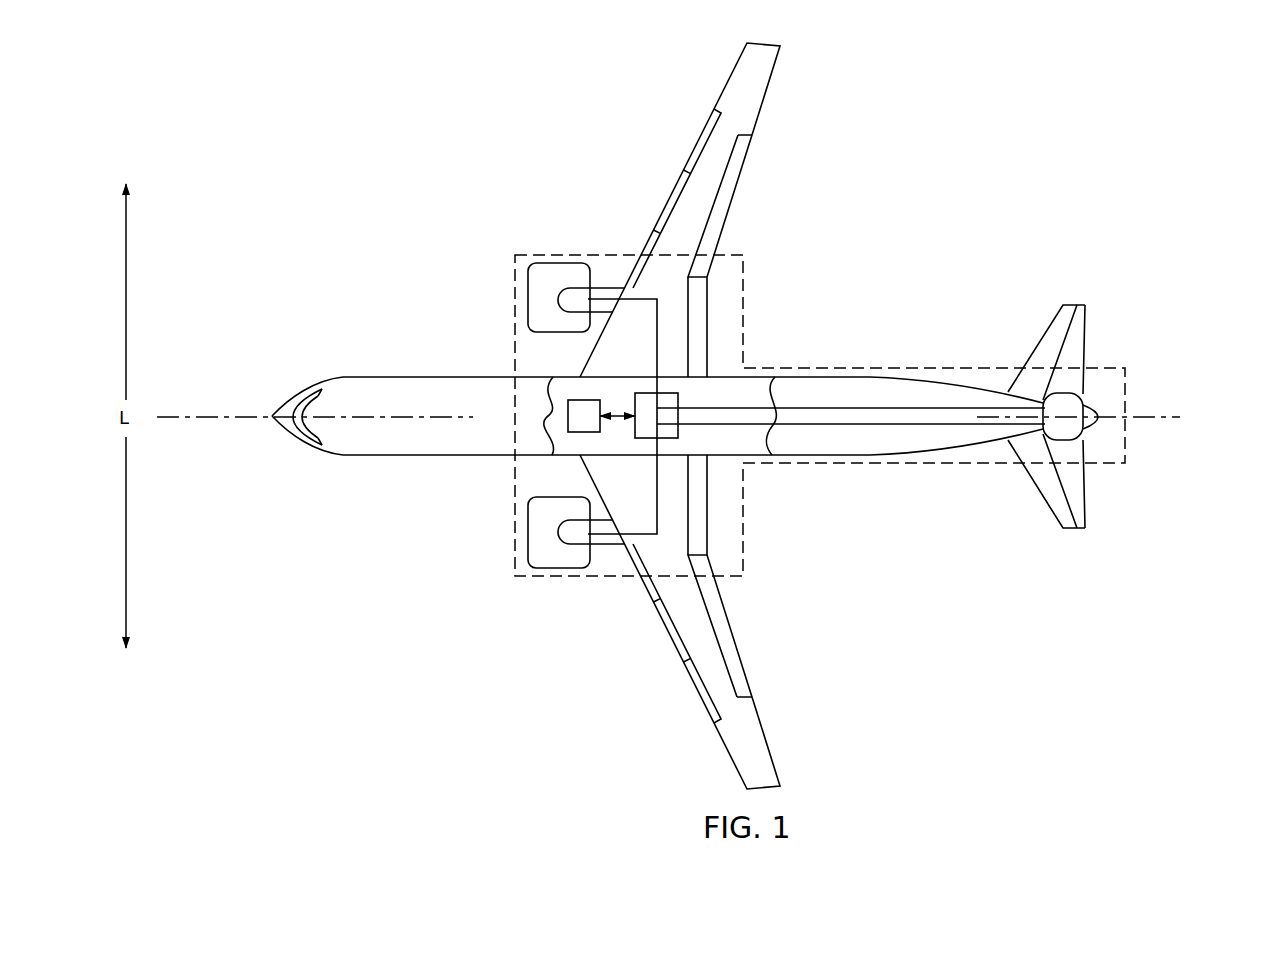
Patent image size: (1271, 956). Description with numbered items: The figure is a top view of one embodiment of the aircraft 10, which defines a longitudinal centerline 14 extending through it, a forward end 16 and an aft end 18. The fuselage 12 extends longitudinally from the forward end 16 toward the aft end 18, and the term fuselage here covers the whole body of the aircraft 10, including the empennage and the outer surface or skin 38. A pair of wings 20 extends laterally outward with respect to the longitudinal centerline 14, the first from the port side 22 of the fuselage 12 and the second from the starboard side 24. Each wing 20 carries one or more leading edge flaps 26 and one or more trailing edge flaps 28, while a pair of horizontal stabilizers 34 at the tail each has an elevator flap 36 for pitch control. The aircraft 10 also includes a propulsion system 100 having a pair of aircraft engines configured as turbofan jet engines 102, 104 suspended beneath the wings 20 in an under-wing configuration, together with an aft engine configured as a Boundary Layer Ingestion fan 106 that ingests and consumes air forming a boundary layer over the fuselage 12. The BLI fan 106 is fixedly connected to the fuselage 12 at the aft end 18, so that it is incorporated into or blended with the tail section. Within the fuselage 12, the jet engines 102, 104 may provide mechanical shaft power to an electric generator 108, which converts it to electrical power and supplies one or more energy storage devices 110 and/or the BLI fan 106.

The aircraft 10 is at (902, 140).
The fuselage 12 is at (643, 424).
The longitudinal centerline 14 is at (210, 423).
The forward end 16 is at (269, 432).
The aft end 18 is at (1087, 454).
The wings 20 is at (699, 416).
The port side 22 is at (438, 463).
The starboard side 24 is at (436, 375).
The leading edge flaps 26 is at (667, 638).
The trailing edge flaps 28 is at (738, 640).
The horizontal stabilizers 34 is at (1052, 333).
The elevator flap 36 is at (1078, 332).
The outer surface or skin 38 is at (859, 432).
The propulsion system 100 is at (798, 365).
The turbofan jet engine 102 is at (550, 554).
The turbofan jet engine 104 is at (546, 277).
The Boundary Layer Ingestion fan 106 is at (1087, 387).
The electric generator 108 is at (680, 400).
The energy storage device 110 is at (582, 435).